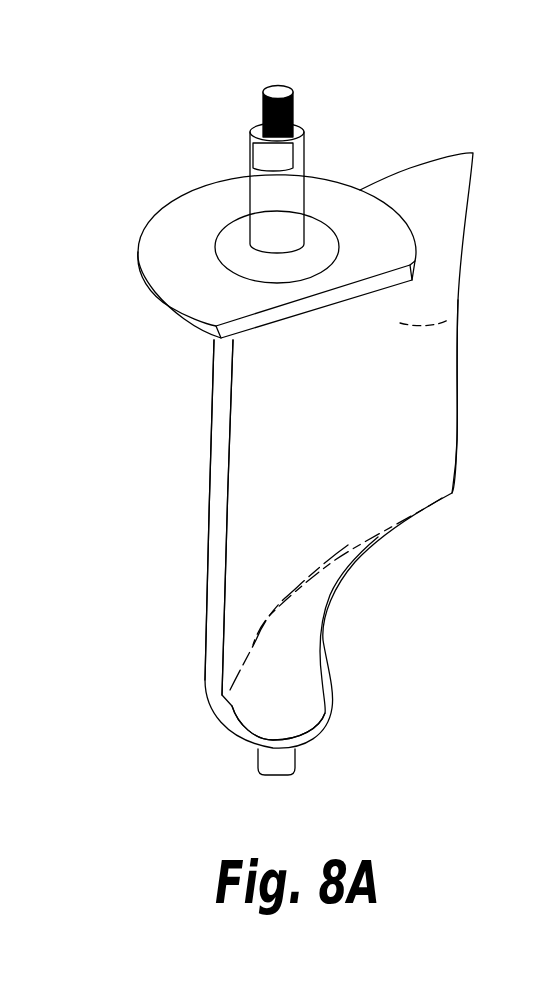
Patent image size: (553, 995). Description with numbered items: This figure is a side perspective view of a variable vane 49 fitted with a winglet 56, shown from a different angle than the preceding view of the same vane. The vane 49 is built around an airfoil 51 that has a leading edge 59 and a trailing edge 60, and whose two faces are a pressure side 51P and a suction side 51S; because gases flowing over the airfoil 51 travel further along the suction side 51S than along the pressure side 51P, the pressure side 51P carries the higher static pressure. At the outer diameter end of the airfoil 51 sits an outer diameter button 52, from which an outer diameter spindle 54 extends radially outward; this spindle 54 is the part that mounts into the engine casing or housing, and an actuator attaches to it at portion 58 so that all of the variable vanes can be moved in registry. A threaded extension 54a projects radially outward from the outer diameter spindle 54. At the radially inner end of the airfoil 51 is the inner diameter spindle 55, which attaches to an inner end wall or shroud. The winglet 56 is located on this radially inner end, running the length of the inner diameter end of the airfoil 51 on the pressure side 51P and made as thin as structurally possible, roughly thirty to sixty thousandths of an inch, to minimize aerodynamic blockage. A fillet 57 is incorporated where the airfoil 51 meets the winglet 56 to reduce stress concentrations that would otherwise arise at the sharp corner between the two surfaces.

The variable vane 49 is at (389, 108).
The airfoil 51 is at (403, 380).
The suction side 51S is at (450, 317).
The pressure side 51P is at (373, 432).
The outer diameter button 52 is at (183, 303).
The outer diameter spindle 54 is at (270, 219).
The threaded extension 54a is at (264, 106).
The inner diameter spindle 55 is at (252, 758).
The winglet 56 is at (289, 695).
The fillet 57 is at (290, 604).
The portion of spindle 58 is at (275, 157).
The leading edge 59 is at (215, 543).
The trailing edge 60 is at (458, 440).